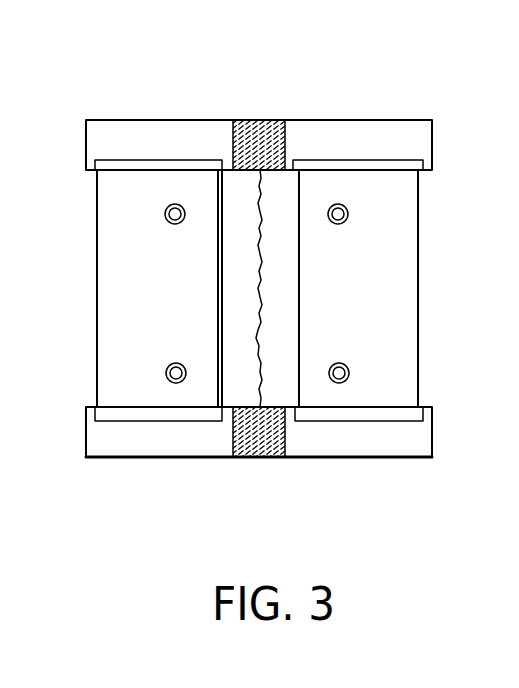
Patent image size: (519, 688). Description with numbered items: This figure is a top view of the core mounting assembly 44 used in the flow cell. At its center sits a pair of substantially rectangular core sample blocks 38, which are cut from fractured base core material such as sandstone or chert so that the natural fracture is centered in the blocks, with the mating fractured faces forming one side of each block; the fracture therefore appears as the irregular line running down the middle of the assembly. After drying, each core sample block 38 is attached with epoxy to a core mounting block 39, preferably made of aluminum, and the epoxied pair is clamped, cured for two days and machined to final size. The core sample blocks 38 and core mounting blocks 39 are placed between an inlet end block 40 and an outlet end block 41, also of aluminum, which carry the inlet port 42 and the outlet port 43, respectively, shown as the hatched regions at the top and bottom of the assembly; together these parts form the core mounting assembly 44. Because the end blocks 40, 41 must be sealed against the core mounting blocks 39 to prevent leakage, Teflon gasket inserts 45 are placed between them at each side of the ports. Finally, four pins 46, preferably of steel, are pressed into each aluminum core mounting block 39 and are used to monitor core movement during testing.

The core sample block 38 is at (243, 267).
The core mounting block 39 is at (327, 320).
The inlet end block 40 is at (213, 118).
The outlet end block 41 is at (323, 459).
The inlet port 42 is at (256, 118).
The outlet port 43 is at (258, 459).
The core mounting assembly 44 is at (259, 270).
The gasket insert 45 is at (168, 158).
The pin 46 is at (173, 226).